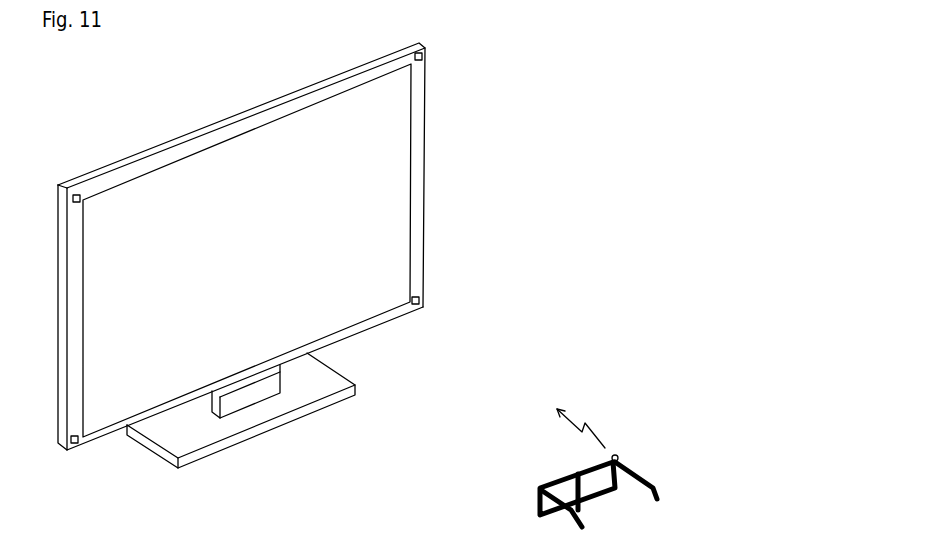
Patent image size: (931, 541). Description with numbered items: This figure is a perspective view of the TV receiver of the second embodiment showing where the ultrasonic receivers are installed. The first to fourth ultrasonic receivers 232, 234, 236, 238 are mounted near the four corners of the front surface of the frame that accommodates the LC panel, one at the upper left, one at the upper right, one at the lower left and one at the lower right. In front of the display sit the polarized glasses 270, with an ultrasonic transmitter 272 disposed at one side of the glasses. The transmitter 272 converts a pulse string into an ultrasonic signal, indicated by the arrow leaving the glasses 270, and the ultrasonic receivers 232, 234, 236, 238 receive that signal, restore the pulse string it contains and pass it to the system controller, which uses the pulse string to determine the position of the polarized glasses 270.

The first ultrasonic receiver 232 is at (80, 200).
The second ultrasonic receiver 234 is at (415, 59).
The third ultrasonic receiver 236 is at (76, 443).
The fourth ultrasonic receiver 238 is at (417, 304).
The polarized glasses 270 is at (643, 478).
The ultrasonic transmitter 272 is at (617, 455).